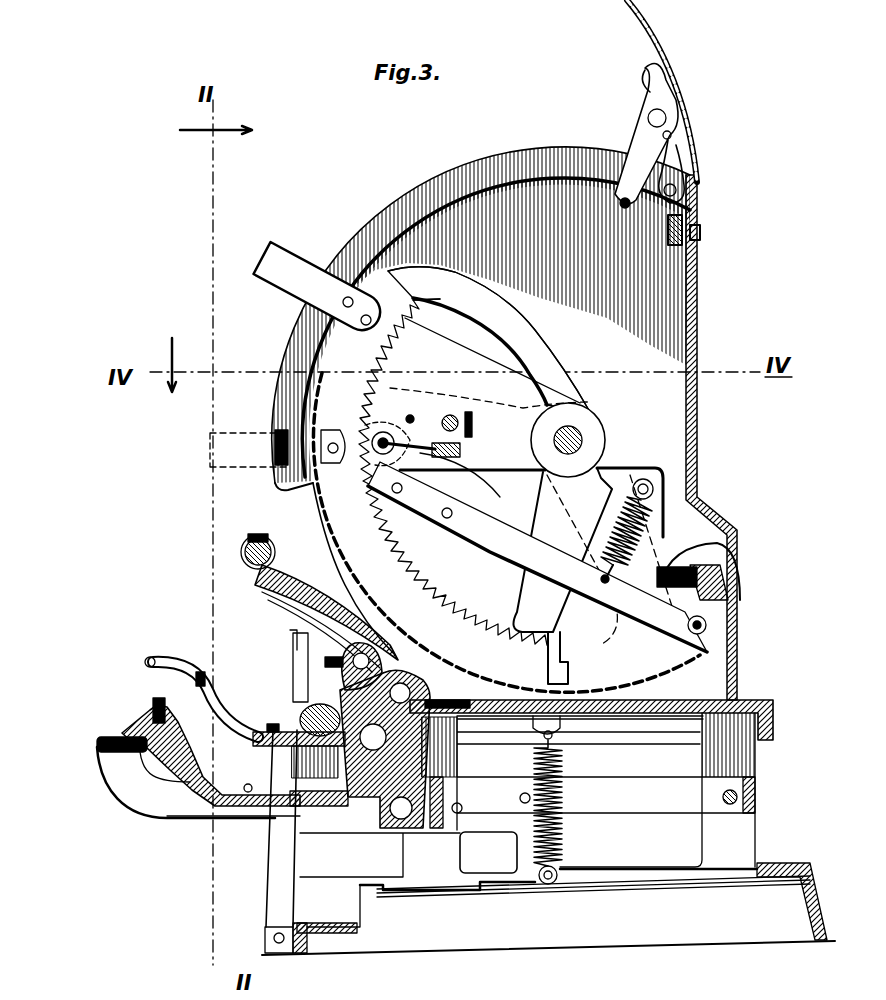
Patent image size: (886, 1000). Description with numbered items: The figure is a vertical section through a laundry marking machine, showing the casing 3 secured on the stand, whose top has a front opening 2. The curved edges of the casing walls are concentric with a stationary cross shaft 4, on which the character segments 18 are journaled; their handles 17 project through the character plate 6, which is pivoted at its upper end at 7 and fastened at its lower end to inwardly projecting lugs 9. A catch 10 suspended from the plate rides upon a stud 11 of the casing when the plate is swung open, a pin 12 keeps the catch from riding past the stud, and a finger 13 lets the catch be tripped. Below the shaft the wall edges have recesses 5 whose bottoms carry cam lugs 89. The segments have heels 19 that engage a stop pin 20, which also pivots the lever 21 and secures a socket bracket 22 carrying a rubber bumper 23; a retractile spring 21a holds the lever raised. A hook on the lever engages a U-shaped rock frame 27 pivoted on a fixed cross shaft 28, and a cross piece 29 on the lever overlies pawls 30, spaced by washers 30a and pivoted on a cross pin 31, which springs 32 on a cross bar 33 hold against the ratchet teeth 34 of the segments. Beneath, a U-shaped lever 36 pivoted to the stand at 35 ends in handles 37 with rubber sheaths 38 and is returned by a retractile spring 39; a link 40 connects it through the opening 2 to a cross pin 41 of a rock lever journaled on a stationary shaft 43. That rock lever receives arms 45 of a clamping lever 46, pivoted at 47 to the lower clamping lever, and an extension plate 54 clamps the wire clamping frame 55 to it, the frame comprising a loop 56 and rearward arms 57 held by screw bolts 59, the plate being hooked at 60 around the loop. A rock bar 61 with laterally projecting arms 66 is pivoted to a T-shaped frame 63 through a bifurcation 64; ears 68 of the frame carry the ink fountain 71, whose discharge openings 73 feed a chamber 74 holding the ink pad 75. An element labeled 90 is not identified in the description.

The opening 2 is at (591, 775).
The casing 3 is at (699, 315).
The stationary cross shaft 4 is at (630, 401).
The recesses 5 is at (320, 462).
The character plate 6 is at (656, 28).
The pivot of character plate 7 is at (683, 183).
The lugs 9 is at (250, 440).
The catch 10 is at (641, 140).
The stud 11 is at (630, 206).
The pin 12 is at (672, 134).
The finger 13 is at (648, 72).
The handles 17 is at (273, 243).
The character segments 18 is at (484, 313).
The heels 19 is at (567, 664).
The stop pin 20 is at (690, 630).
The lever 21 is at (603, 584).
The retractile spring 21a is at (770, 490).
The socket bracket 22 is at (713, 585).
The bumper 23 is at (706, 548).
The U-shaped rock frame 27 is at (480, 427).
The fixed cross shaft 28 is at (463, 412).
The cross piece 29 is at (412, 416).
The pawls 30 is at (385, 438).
The washers 30a is at (416, 512).
The cross pin 31 is at (363, 453).
The springs 32 is at (455, 461).
The cross bar 33 is at (480, 470).
The ratchet teeth 34 is at (405, 318).
The pivot of U-shaped lever 35 is at (726, 792).
The U-shaped lever 36 is at (145, 822).
The handles 37 is at (100, 751).
The rubber sheaths 38 is at (97, 739).
The retractile spring 39 is at (560, 836).
The link 40 is at (423, 833).
The cross pin 41 is at (413, 696).
The stationary shaft 43 is at (405, 744).
The arms 45 is at (300, 778).
The clamping lever 46 is at (258, 745).
The pivot of clamping lever 47 is at (298, 760).
The extension plate 54 is at (222, 703).
The wire clamping frame 55 is at (160, 655).
The loop 56 is at (145, 662).
The arms 57 is at (262, 739).
The screw bolts 59 is at (273, 724).
The hook 60 is at (200, 672).
The rock bar 61 is at (366, 665).
The T-shaped frame 63 is at (302, 600).
The bifurcation 64 is at (350, 640).
The laterally projecting arms 66 is at (405, 662).
The ears 68 is at (243, 560).
The ink fountain 71 is at (250, 568).
The ink discharge openings 73 is at (248, 556).
The external chamber 74 is at (258, 545).
The ink pad 75 is at (255, 540).
The cam lugs 89 is at (274, 893).
The bracket 90 is at (292, 640).